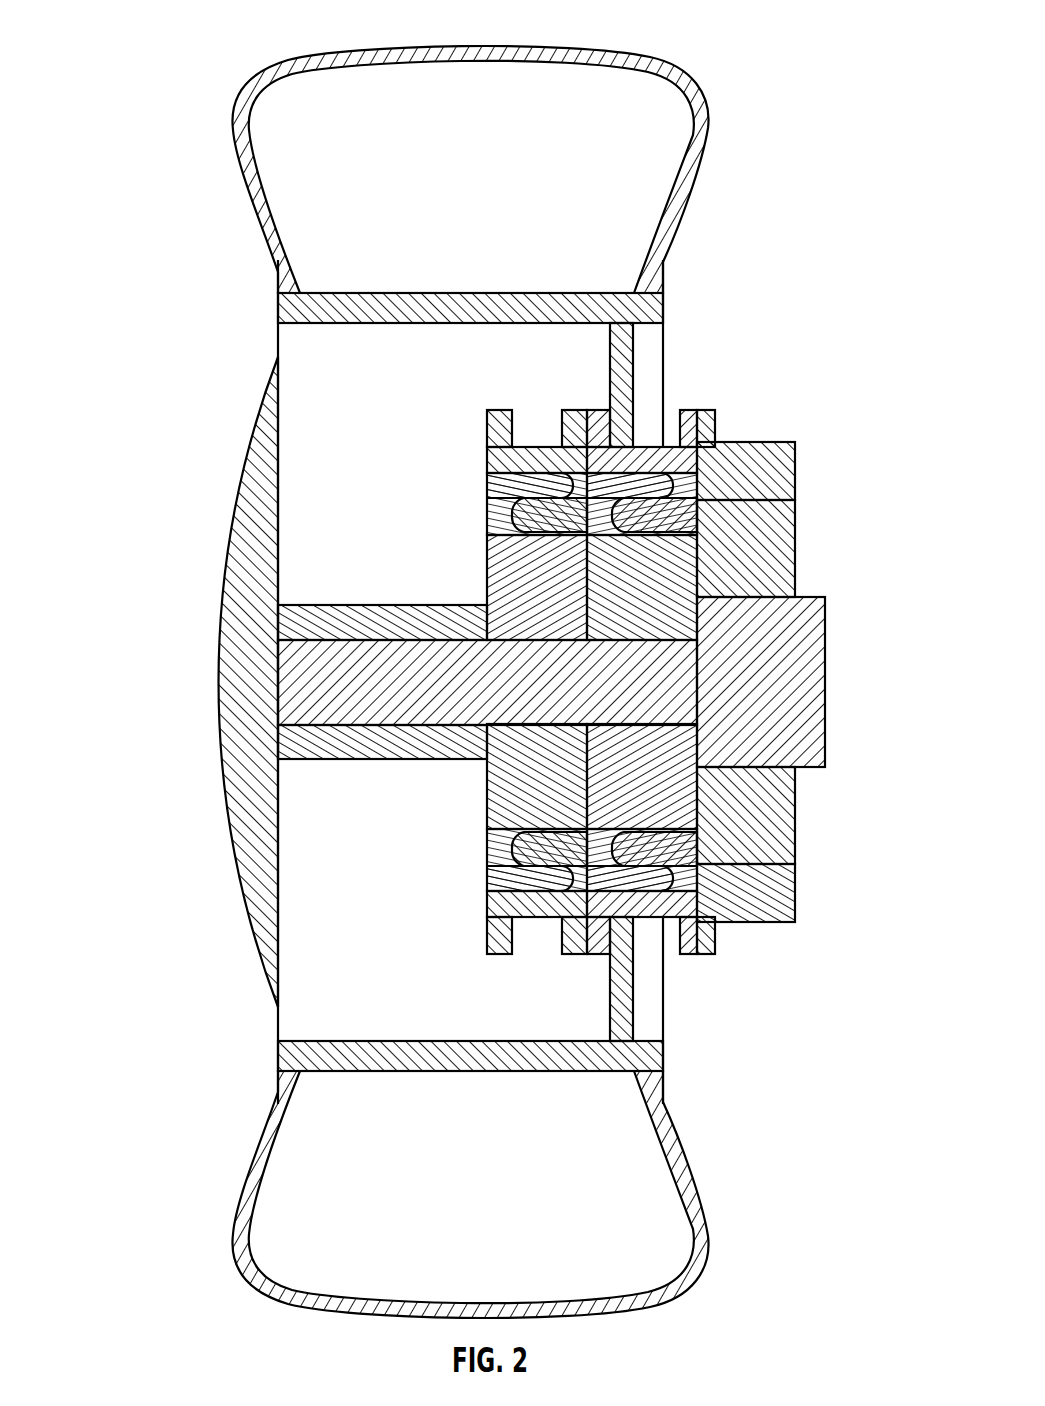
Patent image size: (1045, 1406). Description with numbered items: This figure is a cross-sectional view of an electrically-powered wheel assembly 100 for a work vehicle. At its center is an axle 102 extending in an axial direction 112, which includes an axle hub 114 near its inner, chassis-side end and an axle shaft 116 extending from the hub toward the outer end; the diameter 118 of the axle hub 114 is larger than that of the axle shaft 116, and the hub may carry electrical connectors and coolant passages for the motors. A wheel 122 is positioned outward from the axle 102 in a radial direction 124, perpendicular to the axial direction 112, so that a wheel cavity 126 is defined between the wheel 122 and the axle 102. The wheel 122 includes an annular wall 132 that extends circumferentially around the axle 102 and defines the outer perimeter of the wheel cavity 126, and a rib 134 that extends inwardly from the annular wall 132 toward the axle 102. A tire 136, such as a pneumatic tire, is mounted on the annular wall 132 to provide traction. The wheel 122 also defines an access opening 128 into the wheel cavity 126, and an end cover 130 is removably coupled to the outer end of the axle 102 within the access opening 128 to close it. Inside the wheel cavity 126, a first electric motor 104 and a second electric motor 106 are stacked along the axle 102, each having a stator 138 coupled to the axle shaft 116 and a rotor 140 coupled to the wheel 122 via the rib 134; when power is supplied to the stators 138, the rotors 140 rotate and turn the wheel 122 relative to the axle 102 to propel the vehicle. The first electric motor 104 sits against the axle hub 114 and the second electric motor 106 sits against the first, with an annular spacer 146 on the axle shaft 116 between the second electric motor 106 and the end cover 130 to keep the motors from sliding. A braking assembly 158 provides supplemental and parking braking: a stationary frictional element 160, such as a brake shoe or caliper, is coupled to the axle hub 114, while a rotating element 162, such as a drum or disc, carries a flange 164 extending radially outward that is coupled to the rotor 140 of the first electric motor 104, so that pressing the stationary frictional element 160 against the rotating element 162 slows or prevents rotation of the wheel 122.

The electrically-powered wheel assembly 100 is at (131, 90).
The axle 102 is at (824, 784).
The first electric motor 104 is at (672, 952).
The second electric motor 106 is at (484, 919).
The axial direction 112 is at (188, 693).
The axle hub 114 is at (812, 597).
The axle shaft 116 is at (452, 708).
The diameter of axle hub 118 is at (863, 767).
The wheel 122 is at (425, 329).
The radial direction 124 is at (109, 670).
The wheel cavity 126 is at (365, 456).
The access opening 128 is at (274, 335).
The end cover 130 is at (225, 553).
The annular wall 132 is at (487, 292).
The rib 134 is at (635, 350).
The tire 136 is at (710, 128).
The stator 138 is at (487, 562).
The rotor 140 is at (667, 443).
The annular spacer 146 is at (380, 760).
The braking assembly 158 is at (764, 935).
The stationary frictional element 160 is at (797, 830).
The rotating element 162 is at (778, 442).
The flange 164 is at (716, 422).